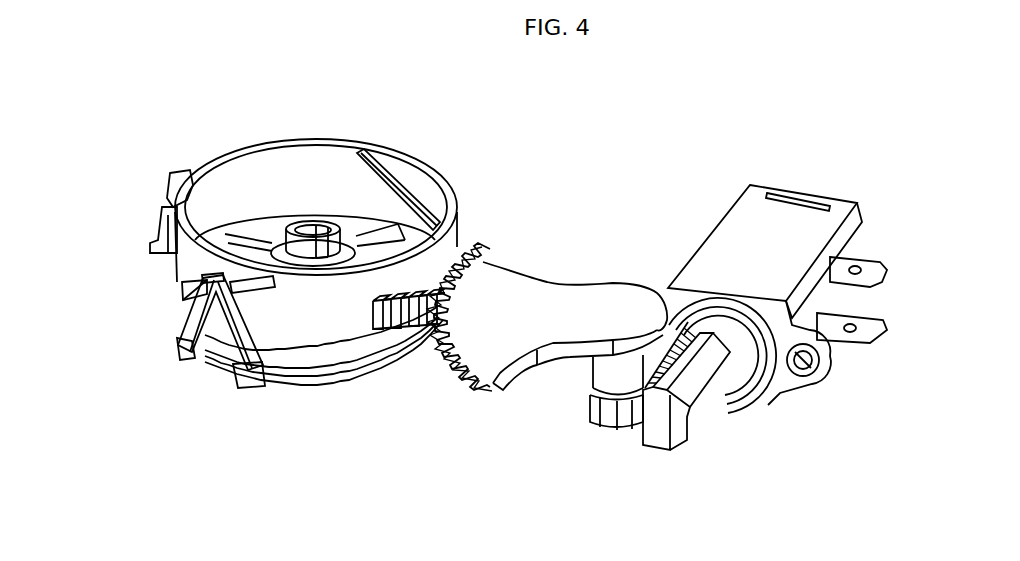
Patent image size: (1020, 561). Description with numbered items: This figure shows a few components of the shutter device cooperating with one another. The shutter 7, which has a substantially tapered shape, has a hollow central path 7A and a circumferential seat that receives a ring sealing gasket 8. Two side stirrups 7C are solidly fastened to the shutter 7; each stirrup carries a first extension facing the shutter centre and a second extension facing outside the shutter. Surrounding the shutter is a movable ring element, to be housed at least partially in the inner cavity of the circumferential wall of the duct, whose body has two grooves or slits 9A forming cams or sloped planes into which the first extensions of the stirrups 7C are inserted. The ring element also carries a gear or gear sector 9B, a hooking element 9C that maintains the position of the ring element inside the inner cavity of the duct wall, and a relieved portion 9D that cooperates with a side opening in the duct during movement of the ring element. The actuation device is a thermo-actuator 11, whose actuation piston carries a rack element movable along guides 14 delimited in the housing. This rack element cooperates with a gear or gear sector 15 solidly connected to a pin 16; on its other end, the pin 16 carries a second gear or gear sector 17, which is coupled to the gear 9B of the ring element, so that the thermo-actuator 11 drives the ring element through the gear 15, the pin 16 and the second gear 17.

The shutter 7 is at (321, 130).
The hollow central path 7A is at (308, 235).
The side stirrups 7C is at (182, 343).
The ring sealing gasket 8 is at (340, 372).
The grooves or slits 9A is at (383, 168).
The gear or gear sector 9B is at (468, 238).
The hooking element 9C is at (155, 243).
The relieved portion 9D is at (178, 188).
The thermo-actuator 11 is at (777, 178).
The guides 14 is at (670, 440).
The gear or gear sector 15 is at (593, 404).
The pin 16 is at (603, 432).
The second gear or gear sector 17 is at (623, 294).